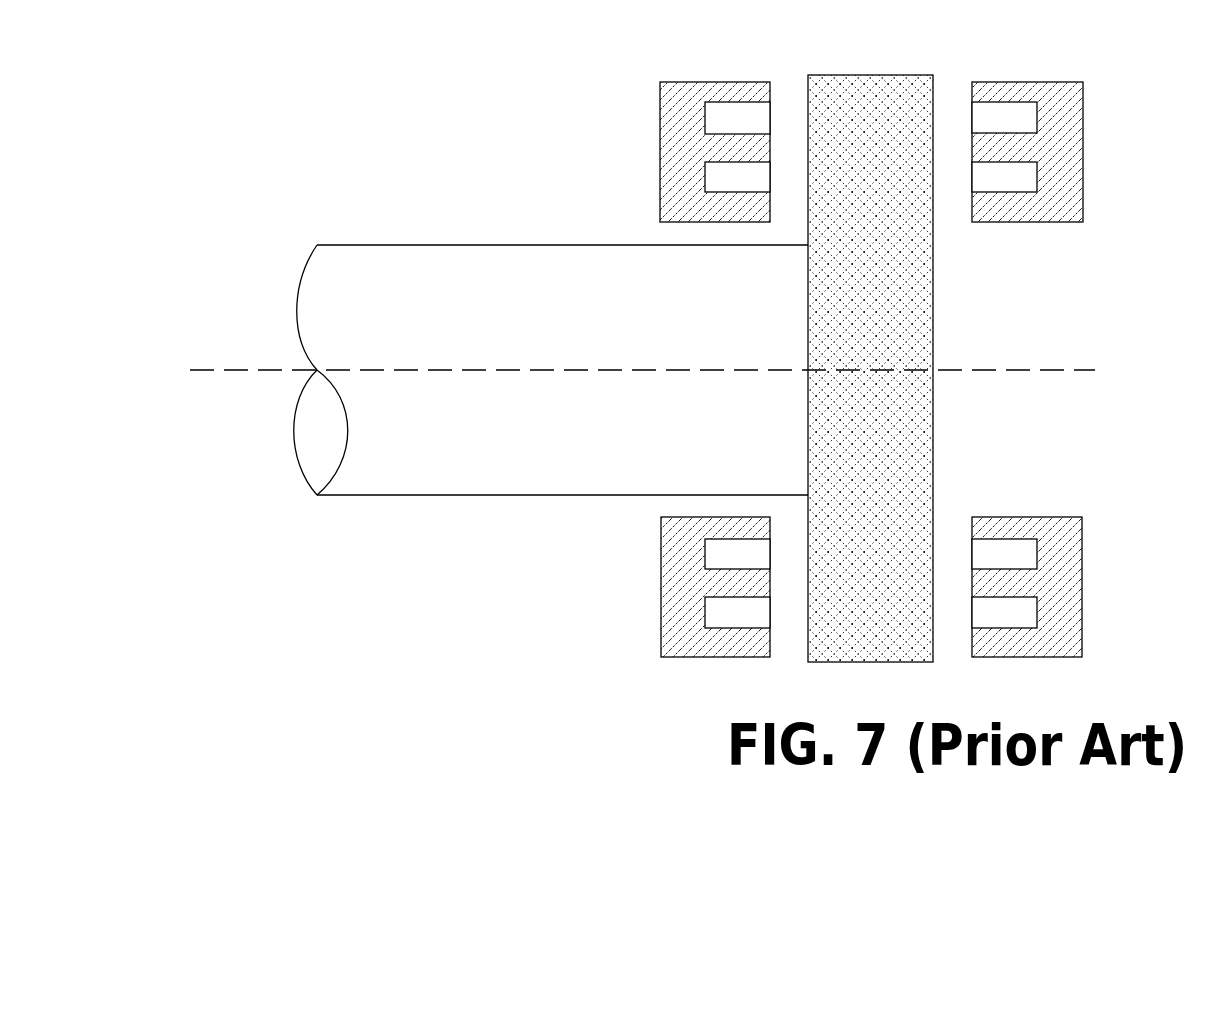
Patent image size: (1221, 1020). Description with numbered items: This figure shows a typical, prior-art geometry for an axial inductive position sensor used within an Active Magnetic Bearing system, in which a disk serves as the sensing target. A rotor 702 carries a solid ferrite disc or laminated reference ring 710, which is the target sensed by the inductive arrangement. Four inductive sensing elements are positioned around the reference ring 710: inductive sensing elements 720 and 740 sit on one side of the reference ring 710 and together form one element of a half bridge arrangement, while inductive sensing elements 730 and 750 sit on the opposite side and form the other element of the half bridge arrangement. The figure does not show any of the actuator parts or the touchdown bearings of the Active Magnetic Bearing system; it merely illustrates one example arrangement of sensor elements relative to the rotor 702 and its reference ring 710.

The rotor 702 is at (432, 497).
The reference ring 710 is at (935, 343).
The inductive sensing element 720 is at (673, 78).
The inductive sensing element 730 is at (1052, 78).
The inductive sensing element 740 is at (698, 660).
The inductive sensing element 750 is at (1058, 663).